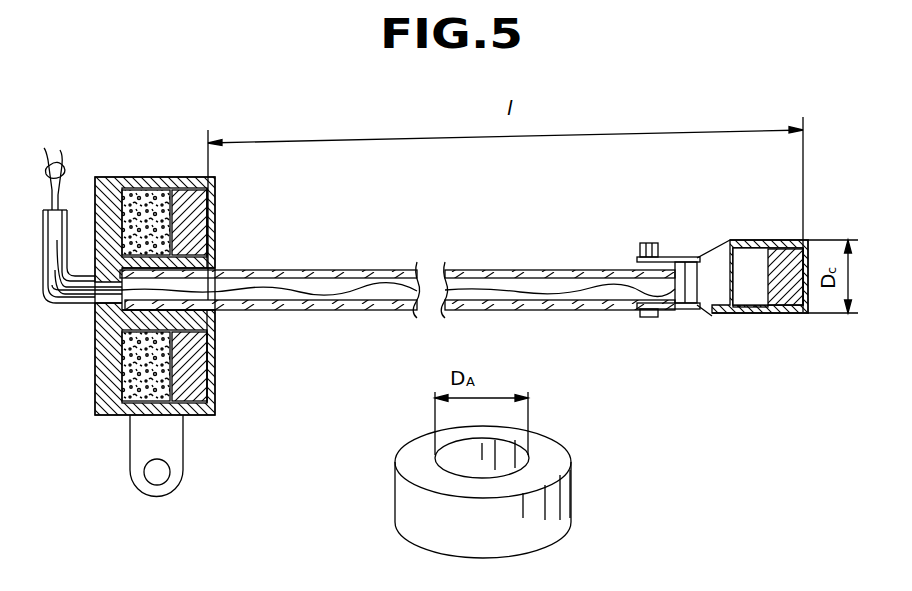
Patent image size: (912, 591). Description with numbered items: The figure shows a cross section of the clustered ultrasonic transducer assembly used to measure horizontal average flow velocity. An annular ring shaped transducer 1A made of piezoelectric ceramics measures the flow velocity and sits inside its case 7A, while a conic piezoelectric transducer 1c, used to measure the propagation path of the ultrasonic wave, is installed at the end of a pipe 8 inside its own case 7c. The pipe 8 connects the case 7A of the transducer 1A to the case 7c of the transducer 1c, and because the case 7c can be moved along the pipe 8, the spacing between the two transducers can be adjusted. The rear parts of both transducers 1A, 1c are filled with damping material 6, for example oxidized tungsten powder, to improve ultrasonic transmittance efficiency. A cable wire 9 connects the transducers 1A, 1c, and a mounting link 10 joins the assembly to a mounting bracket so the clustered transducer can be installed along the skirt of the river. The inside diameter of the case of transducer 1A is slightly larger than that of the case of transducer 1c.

The transducer 1A is at (208, 357).
The transducer 1c is at (543, 458).
The damping material 6 is at (155, 205).
The case 7A is at (112, 400).
The case 7c is at (718, 303).
The pipe 8 is at (330, 272).
The cable wire 9 is at (68, 158).
The mounting link 10 is at (172, 440).